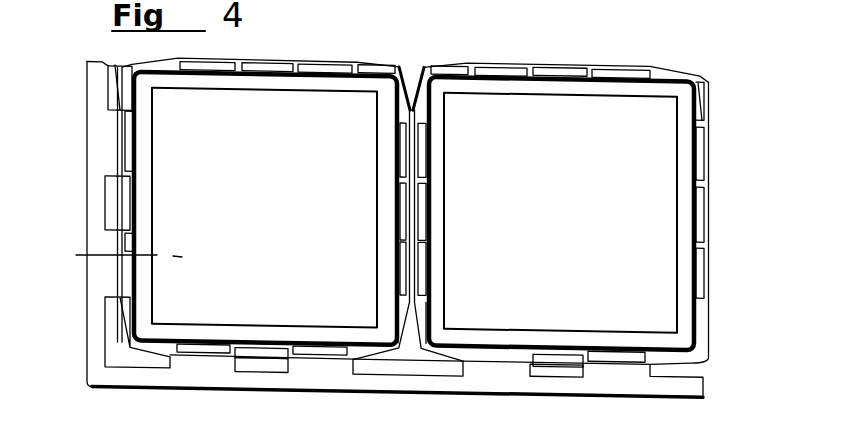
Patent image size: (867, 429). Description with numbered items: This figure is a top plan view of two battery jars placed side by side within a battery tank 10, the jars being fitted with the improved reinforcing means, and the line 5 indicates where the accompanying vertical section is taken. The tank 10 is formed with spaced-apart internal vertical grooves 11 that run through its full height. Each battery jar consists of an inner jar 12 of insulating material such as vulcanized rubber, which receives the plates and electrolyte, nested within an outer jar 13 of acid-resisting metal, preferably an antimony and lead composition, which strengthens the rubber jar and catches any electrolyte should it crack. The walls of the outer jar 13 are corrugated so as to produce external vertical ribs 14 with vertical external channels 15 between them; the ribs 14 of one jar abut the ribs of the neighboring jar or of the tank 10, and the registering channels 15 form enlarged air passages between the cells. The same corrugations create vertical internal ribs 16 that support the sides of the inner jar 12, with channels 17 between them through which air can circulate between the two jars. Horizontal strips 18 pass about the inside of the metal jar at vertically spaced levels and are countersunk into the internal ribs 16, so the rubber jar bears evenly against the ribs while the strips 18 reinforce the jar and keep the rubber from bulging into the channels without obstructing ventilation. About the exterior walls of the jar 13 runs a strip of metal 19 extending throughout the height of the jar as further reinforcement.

The section line 5 is at (131, 257).
The battery tank 10 is at (88, 333).
The internal vertical grooves 11 is at (107, 202).
The inner jar 12 is at (414, 210).
The outer jar 13 is at (415, 237).
The external vertical ribs 14 is at (322, 70).
The vertical external channels 15 is at (257, 355).
The internal ribs 16 is at (268, 70).
The channels 17 is at (402, 268).
The strips 18 is at (428, 142).
The strip of metal 19 is at (152, 63).